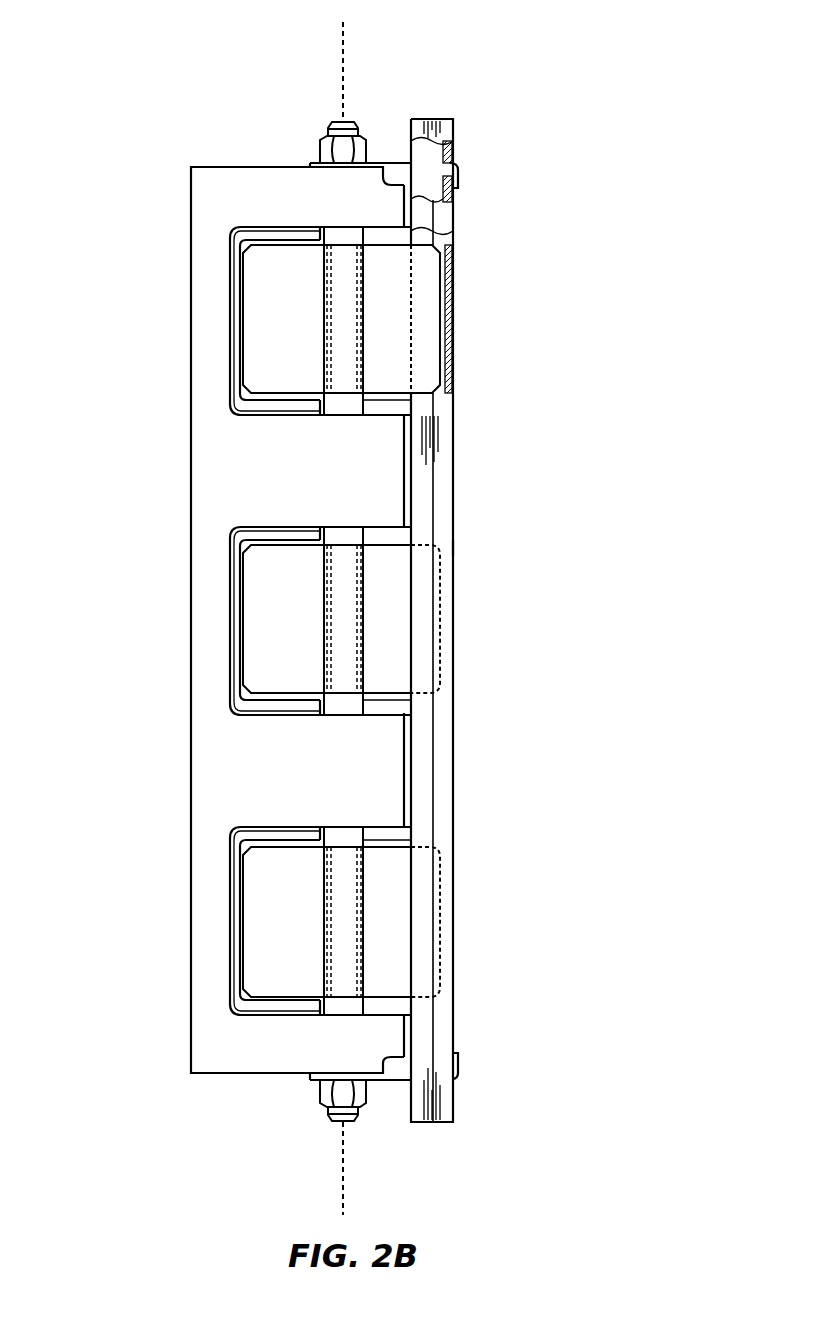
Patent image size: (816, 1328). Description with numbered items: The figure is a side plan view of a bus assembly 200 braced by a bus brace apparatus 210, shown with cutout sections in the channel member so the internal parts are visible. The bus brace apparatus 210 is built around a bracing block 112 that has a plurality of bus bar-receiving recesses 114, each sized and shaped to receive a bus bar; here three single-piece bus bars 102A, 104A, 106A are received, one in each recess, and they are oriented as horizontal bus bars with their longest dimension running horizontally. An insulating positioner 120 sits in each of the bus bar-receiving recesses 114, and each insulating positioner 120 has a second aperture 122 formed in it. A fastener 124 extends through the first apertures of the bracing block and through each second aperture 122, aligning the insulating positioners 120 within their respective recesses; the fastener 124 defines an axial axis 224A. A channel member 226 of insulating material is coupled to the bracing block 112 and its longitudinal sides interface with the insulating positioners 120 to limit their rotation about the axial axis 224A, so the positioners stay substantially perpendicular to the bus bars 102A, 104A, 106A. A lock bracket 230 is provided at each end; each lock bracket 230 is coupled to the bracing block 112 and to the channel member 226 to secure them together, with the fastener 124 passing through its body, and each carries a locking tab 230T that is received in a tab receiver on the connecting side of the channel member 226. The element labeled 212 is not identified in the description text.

The bus assembly 200 is at (208, 70).
The bus brace apparatus 210 is at (228, 153).
The mounting plate 212 is at (453, 237).
The lock bracket 230 is at (391, 158).
The locking tab 230T is at (458, 180).
The fastener 124 is at (328, 127).
The axial axis 224A is at (343, 52).
The channel member 226 is at (456, 548).
The bracing block 112 is at (189, 248).
The single-piece bus bar 102A is at (228, 320).
The single-piece bus bar 104A is at (228, 590).
The single-piece bus bar 106A is at (228, 893).
The insulating positioner 120 is at (305, 329).
The second aperture 122 is at (358, 307).
The bus bar-receiving recess 114 is at (386, 404).